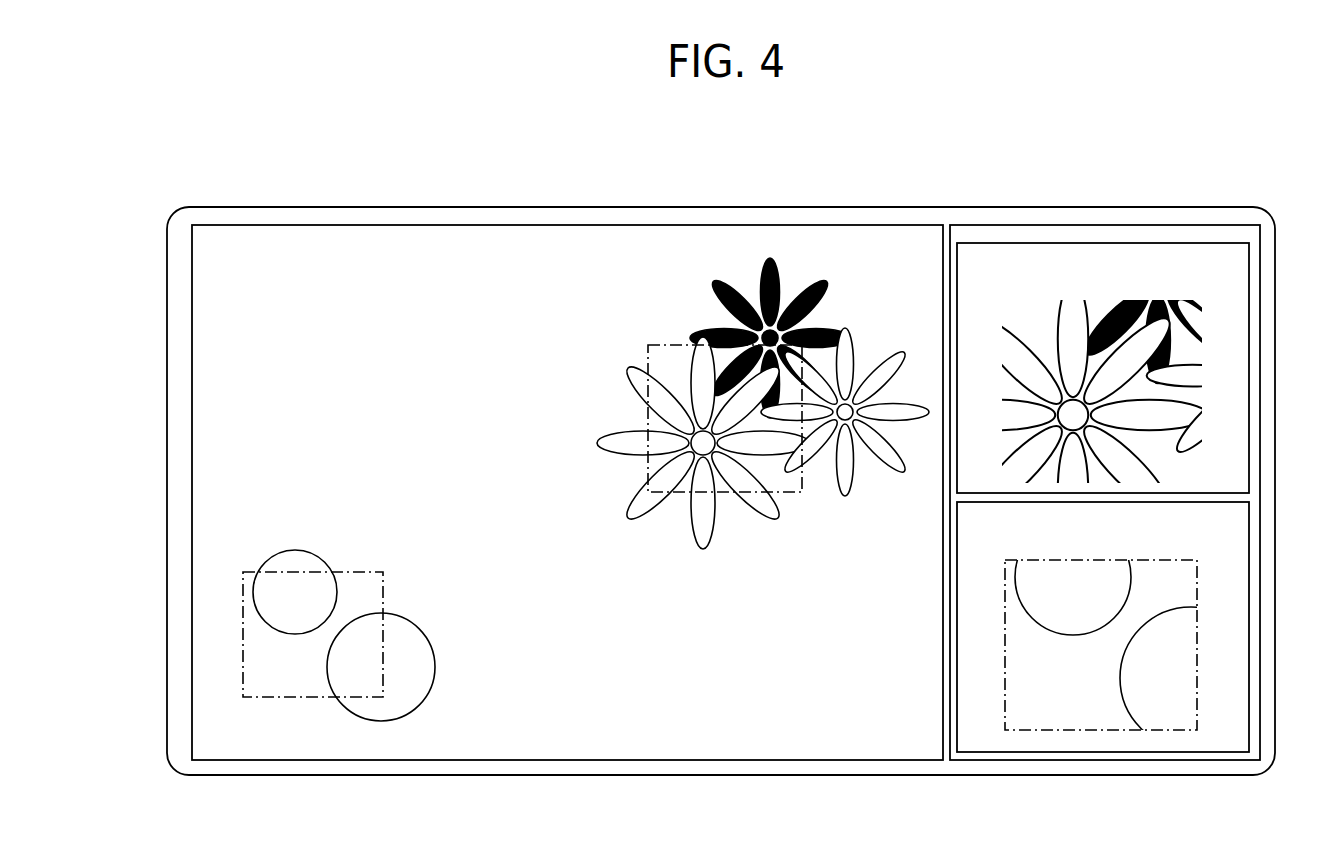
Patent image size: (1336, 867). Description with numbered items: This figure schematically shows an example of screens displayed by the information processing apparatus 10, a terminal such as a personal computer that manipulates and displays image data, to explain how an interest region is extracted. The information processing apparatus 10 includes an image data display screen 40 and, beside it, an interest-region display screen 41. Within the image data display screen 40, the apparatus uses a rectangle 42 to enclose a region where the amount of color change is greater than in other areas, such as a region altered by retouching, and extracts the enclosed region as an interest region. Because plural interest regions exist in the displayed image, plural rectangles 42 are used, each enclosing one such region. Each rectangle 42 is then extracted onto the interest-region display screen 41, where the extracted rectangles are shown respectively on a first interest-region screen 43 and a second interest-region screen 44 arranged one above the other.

The information processing apparatus 10 is at (195, 207).
The image data display screen 40 is at (258, 225).
The interest-region display screen 41 is at (963, 225).
The rectangle 42 is at (668, 345).
The first interest-region screen 43 is at (1249, 283).
The second interest-region screen 44 is at (1249, 533).